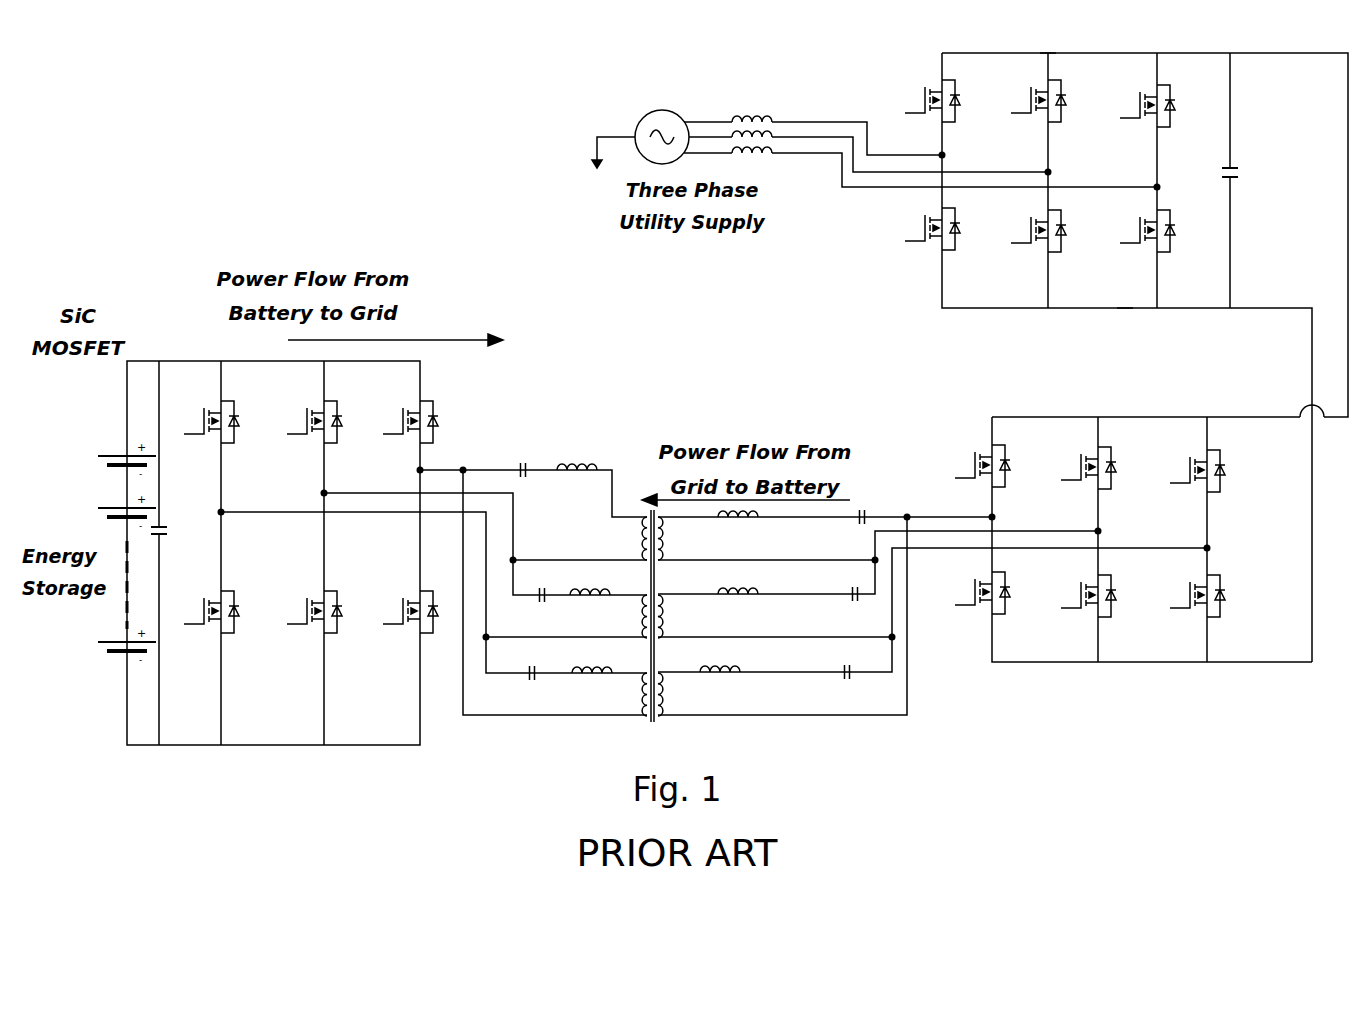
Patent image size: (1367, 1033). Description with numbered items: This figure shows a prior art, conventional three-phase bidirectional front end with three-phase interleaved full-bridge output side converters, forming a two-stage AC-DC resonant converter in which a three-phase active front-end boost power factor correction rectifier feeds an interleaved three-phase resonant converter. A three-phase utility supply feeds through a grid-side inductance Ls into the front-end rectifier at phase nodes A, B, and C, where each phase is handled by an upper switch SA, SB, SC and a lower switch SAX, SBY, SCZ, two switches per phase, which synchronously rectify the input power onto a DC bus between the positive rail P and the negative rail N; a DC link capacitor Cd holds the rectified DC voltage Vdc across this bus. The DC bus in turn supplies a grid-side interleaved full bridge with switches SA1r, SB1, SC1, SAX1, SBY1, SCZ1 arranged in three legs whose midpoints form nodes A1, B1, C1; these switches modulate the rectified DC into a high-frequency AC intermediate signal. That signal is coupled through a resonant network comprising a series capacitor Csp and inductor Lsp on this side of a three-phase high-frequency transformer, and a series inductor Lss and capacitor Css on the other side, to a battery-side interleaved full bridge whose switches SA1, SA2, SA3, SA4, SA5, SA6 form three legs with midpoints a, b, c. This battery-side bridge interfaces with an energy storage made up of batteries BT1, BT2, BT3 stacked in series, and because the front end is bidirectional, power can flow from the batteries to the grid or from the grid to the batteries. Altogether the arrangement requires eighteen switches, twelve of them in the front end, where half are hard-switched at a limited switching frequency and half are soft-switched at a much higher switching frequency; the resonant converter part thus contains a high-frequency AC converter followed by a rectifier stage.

The grid side inductor Ls is at (874, 139).
The phase A node A is at (952, 155).
The phase B node B is at (1058, 172).
The phase C node C is at (1167, 187).
The positive dc bus P is at (1048, 40).
The negative dc bus N is at (1125, 324).
The switch SA is at (926, 101).
The switch SB is at (1033, 101).
The switch SC is at (1141, 106).
The switch SAX is at (920, 229).
The switch SBY is at (1027, 231).
The switch SCZ is at (1135, 231).
The dc link capacitor Cd is at (1248, 178).
The dc link voltage Vdc is at (1284, 198).
The battery 1 BT1 is at (102, 460).
The battery 2 BT2 is at (102, 512).
The battery 3 BT3 is at (99, 646).
The switch SA1 is at (400, 422).
The switch SA2 is at (400, 612).
The switch SA3 is at (305, 422).
The switch SA4 is at (305, 612).
The switch SA5 is at (204, 422).
The switch SA6 is at (204, 612).
The node a is at (412, 469).
The node b is at (317, 492).
The node c is at (214, 511).
The series resonant capacitor Css is at (527, 571).
The series resonant inductor Lss is at (584, 571).
The secondary resonant inductor Lsp is at (729, 591).
The secondary resonant capacitor Csp is at (842, 594).
The node A1 is at (1009, 516).
The node B1 is at (1115, 532).
The node C1 is at (1224, 548).
The switch SA1 (grid-side inverter) SA1r is at (973, 466).
The switch SB1 is at (1079, 468).
The switch SC1 is at (1188, 471).
The switch SAX1 is at (967, 593).
The switch SBY1 is at (1073, 596).
The switch SCZ1 is at (1181, 596).